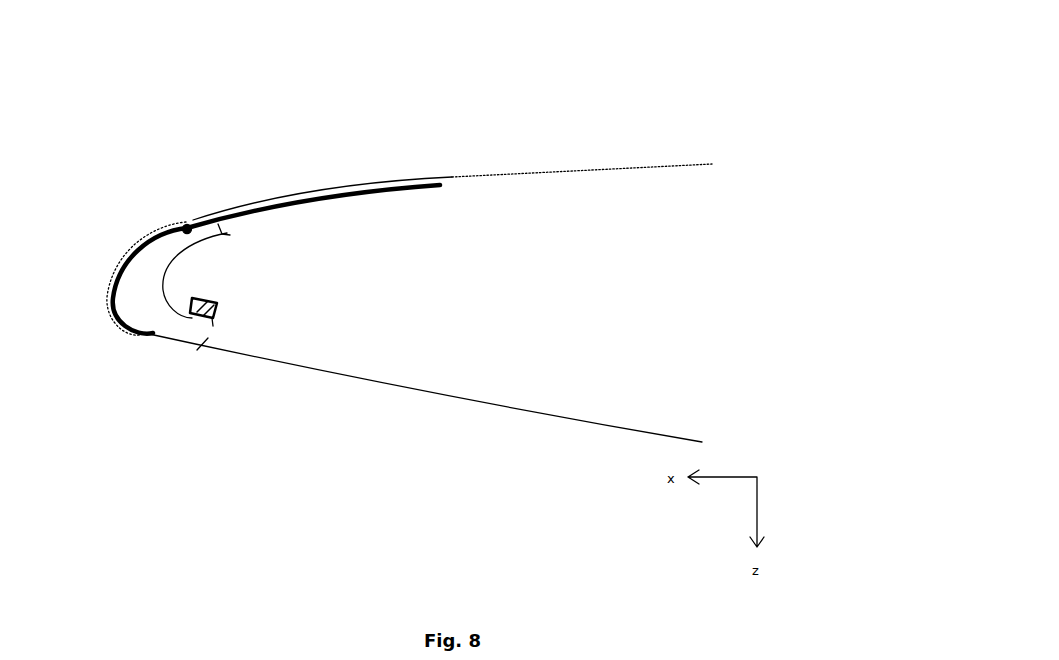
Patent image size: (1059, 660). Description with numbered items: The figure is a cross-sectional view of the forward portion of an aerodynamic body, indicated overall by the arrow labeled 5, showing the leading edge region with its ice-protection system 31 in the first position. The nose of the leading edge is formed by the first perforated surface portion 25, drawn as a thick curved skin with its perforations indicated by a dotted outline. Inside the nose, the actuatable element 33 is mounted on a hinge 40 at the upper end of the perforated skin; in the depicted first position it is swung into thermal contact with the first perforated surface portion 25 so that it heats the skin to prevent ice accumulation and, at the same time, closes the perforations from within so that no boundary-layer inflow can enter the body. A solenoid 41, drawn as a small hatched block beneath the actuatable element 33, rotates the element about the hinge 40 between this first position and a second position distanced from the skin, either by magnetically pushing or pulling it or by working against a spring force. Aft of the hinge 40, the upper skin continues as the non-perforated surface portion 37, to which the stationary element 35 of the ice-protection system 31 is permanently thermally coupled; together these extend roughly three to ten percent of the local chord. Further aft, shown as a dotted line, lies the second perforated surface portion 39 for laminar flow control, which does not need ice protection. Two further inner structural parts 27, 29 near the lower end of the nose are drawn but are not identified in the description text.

The leading edge assembly 5 is at (657, 110).
The first perforated surface portion 25 is at (112, 270).
The lower surface line 27 is at (168, 332).
The rear support 29 is at (209, 336).
The ice-protection system 31 is at (236, 234).
The actuatable element 33 is at (122, 306).
The stationary element 35 is at (307, 202).
The non-perforated surface portion 37 is at (311, 190).
The second perforated surface portion 39 is at (487, 168).
The hinge 40 is at (180, 226).
The solenoid 41 is at (216, 312).